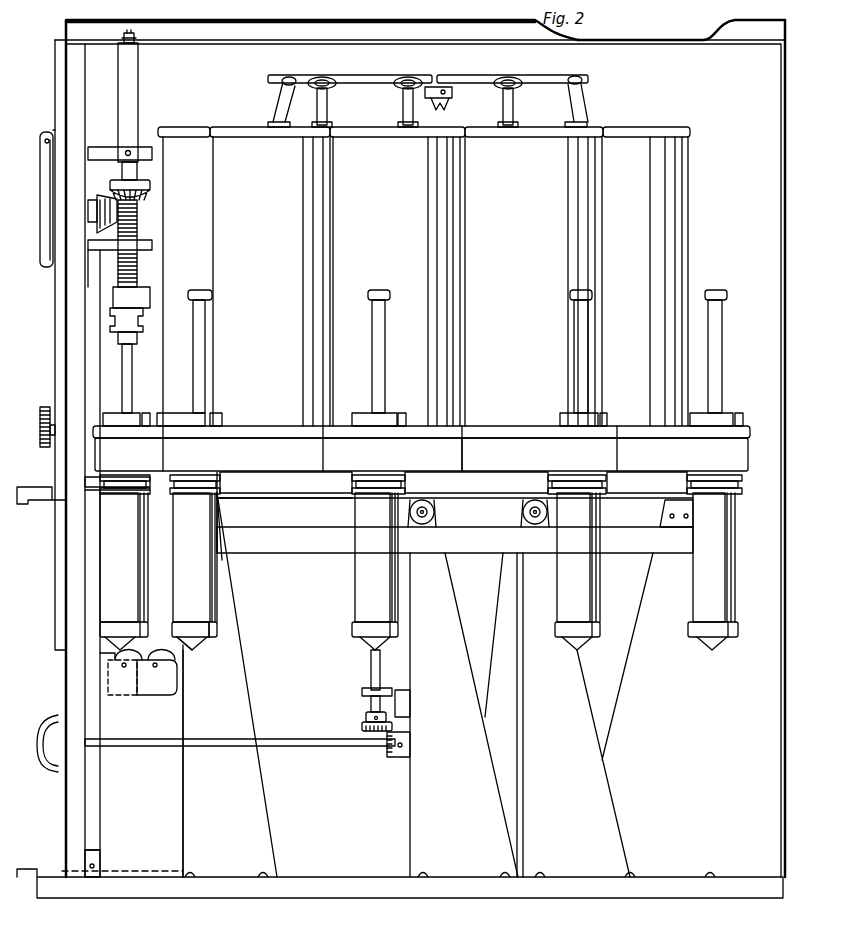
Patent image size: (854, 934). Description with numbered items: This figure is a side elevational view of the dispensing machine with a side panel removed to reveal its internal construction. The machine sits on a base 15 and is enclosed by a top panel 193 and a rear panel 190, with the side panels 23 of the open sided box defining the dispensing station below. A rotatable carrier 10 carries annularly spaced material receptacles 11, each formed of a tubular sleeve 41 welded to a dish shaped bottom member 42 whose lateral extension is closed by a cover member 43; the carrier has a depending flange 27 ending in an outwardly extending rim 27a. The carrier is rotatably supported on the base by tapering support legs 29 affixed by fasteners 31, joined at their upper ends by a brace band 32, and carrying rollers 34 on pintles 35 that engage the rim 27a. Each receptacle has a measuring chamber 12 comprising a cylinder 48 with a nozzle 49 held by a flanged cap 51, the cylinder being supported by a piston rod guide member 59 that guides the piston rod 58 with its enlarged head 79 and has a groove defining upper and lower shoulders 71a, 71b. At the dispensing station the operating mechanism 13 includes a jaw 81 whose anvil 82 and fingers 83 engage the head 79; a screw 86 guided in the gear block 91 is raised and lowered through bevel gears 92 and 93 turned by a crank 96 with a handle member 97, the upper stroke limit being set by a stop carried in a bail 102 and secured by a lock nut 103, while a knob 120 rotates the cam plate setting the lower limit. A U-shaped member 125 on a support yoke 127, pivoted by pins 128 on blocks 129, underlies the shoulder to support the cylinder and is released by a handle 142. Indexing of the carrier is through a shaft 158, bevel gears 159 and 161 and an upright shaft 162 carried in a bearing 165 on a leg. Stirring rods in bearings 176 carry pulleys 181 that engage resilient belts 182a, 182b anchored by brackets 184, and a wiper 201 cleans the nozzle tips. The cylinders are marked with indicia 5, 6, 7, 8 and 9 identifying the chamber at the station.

The top panel 193 is at (326, 22).
The lock nut 103 is at (140, 37).
The bail 102 is at (134, 86).
The crank 96 is at (52, 133).
The handle member 97 is at (46, 178).
The gear block 91 is at (152, 155).
The bevel gear 92 is at (150, 191).
The bevel gear 93 is at (98, 198).
The screw 86 is at (135, 234).
The operating mechanism 13 is at (112, 297).
The jaw 81 is at (146, 292).
The anvil 82 is at (144, 322).
The fingers 83 is at (118, 335).
The knob 120 is at (42, 413).
The handle 142 is at (40, 487).
The U-shaped member 125 is at (124, 497).
The upper shoulder 71a is at (146, 475).
The lower shoulder 71b is at (206, 482).
The rim 27a is at (165, 495).
The flange 27 is at (268, 478).
The rotatable carrier 10 is at (306, 508).
The brace band 32 is at (297, 546).
The support yoke 127 is at (95, 711).
The wiper 201 is at (154, 688).
The blocks 129 is at (95, 852).
The pins 128 is at (95, 866).
The side panels 23 is at (168, 812).
The support legs 29 is at (258, 820).
The fasteners 31 is at (258, 874).
The base 15 is at (371, 887).
The shaft 158 is at (310, 748).
The bevel gear 159 is at (381, 752).
The bevel gear 161 is at (364, 724).
The upright shaft 162 is at (370, 663).
The bearing 165 is at (389, 705).
The measuring chamber 12 is at (349, 597).
The flanged cap 51 is at (208, 630).
The nozzle 49 is at (194, 650).
The cylinder 48 is at (590, 577).
The rear panel 190 is at (783, 737).
The material receptacles 11 is at (696, 226).
The tubular sleeve 41 is at (452, 348).
The dish shaped bottom member 42 is at (503, 455).
The cover member 43 is at (245, 428).
The piston rod guide member 59 is at (216, 420).
The piston rod 58 is at (384, 359).
The enlarged head 79 is at (381, 291).
The rollers 34 is at (538, 524).
The pintles 35 is at (536, 501).
The bearing 176 is at (276, 103).
The pulley 181 is at (336, 90).
The resilient belt 182a is at (322, 76).
The resilient belt 182b is at (556, 76).
The brackets 184 is at (447, 97).
The station 5 cylinder 5 is at (123, 571).
The station 6 cylinder 6 is at (194, 571).
The station 7 cylinder 7 is at (375, 571).
The station 8 cylinder 8 is at (577, 571).
The station 9 cylinder 9 is at (713, 571).